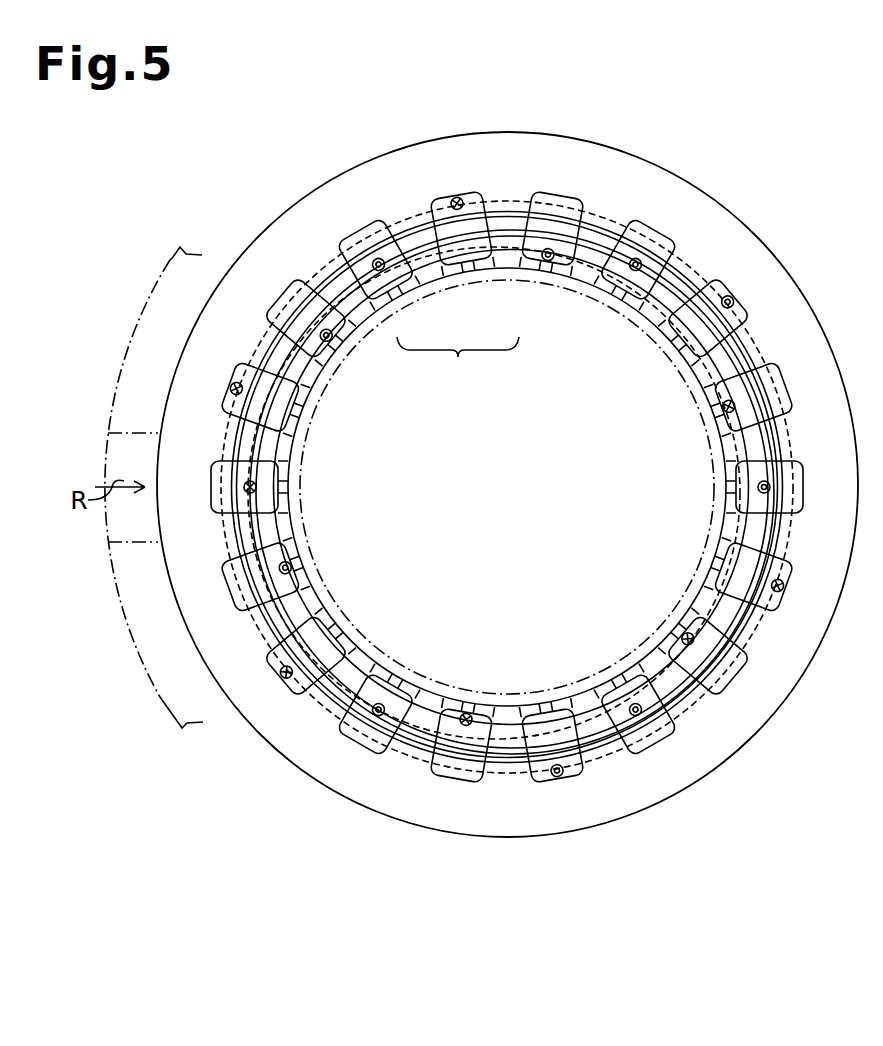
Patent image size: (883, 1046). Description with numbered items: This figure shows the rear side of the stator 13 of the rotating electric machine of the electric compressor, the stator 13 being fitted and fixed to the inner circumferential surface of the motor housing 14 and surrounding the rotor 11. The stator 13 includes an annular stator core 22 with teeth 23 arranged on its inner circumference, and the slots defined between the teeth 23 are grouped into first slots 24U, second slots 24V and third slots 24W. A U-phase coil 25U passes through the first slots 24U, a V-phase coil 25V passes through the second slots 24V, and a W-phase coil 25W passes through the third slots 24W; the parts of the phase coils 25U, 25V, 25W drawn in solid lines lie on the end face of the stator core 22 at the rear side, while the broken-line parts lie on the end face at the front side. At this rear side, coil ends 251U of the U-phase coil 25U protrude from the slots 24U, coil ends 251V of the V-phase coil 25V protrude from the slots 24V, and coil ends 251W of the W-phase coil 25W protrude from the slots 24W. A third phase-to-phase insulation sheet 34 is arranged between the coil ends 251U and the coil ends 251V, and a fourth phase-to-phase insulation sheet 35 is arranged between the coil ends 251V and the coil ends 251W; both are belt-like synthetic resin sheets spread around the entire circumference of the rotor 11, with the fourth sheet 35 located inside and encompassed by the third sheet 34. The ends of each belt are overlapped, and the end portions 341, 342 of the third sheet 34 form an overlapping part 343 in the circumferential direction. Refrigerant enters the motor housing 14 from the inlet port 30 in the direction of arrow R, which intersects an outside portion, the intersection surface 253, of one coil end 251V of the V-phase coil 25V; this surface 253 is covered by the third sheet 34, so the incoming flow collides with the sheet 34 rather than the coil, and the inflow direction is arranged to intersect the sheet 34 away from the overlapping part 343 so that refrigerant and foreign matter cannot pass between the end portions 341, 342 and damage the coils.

The rotor 11 is at (510, 700).
The stator 13 is at (731, 113).
The motor housing 14 is at (163, 282).
The stator core 22 is at (790, 299).
The teeth 23 is at (645, 318).
The first slots 24U is at (472, 195).
The second slots 24V is at (355, 232).
The third slots 24W is at (543, 198).
The U-phase coil 25U is at (572, 192).
The V-phase coil 25V is at (690, 256).
The W-phase coil 25W is at (714, 448).
The inlet port 30 is at (138, 540).
The third phase-to-phase insulation sheet 34 is at (220, 465).
The fourth phase-to-phase insulation sheet 35 is at (272, 512).
The coil ends of the U-phase coil 251U is at (413, 228).
The coil ends of the V-phase coil 251V is at (503, 222).
The coil ends of the W-phase coil 251W is at (560, 256).
The intersection surface 253 is at (262, 500).
The end portion of the phase-to-phase insulation sheet 341 is at (462, 250).
The end portion of the phase-to-phase insulation sheet 342 is at (500, 242).
The overlapping part 343 is at (458, 360).